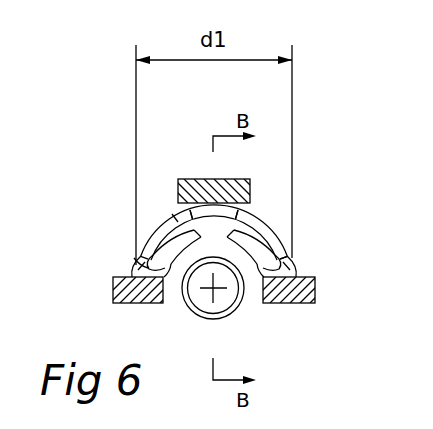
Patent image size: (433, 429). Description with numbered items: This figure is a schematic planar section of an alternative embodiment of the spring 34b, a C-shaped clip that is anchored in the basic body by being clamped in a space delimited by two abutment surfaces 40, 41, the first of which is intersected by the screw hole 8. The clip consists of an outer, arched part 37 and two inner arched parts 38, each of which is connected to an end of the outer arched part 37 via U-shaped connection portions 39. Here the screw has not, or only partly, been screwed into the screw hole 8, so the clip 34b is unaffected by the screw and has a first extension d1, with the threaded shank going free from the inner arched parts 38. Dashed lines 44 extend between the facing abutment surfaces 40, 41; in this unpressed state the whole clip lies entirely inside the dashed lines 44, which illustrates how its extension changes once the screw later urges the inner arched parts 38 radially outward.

The screw hole 8 is at (215, 305).
The spring 34b is at (260, 202).
The outer arched part 37 is at (263, 222).
The inner arched parts 38 is at (183, 250).
The U-shaped connection portions 39 is at (140, 272).
The abutment surface 40 is at (305, 271).
The abutment surface 41 is at (172, 214).
The dashed lines 44 is at (137, 260).